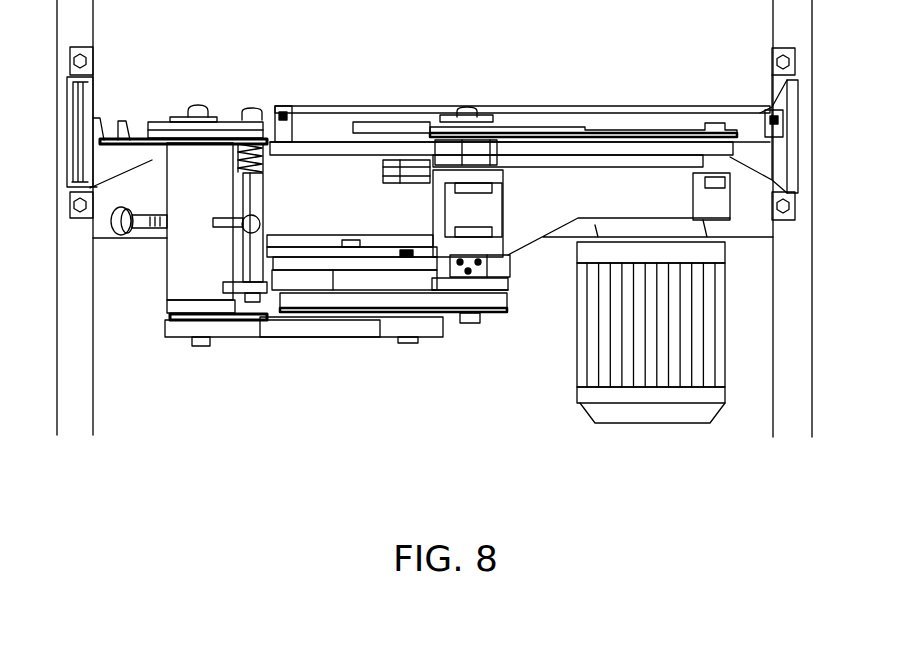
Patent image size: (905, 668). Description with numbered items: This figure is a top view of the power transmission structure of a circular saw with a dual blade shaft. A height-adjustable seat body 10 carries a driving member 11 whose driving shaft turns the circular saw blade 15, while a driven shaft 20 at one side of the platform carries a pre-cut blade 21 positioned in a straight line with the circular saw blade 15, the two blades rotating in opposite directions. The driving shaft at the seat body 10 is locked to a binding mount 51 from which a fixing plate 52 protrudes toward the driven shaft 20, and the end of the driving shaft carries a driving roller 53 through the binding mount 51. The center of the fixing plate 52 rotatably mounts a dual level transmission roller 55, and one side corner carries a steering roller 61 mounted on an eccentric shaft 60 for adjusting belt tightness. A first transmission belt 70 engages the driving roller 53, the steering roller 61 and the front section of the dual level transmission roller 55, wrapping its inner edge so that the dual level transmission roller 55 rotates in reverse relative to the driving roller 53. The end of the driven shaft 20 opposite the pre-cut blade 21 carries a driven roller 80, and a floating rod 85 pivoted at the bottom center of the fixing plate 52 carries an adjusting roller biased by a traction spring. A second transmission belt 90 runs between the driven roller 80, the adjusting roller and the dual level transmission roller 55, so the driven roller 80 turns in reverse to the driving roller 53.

The seat body 10 is at (648, 176).
The driving member 11 is at (580, 384).
The circular saw blade 15 is at (392, 128).
The driven shaft 20 is at (172, 190).
The pre-cut blade 21 is at (220, 117).
The binding mount 51 is at (513, 278).
The fixing plate 52 is at (383, 237).
The driving roller 53 is at (488, 314).
The dual level transmission roller 55 is at (424, 340).
The eccentric shaft 60 is at (277, 285).
The steering roller 61 is at (320, 313).
The first transmission belt 70 is at (500, 292).
The driven roller 80 is at (178, 346).
The floating rod 85 is at (283, 247).
The second transmission belt 90 is at (265, 333).